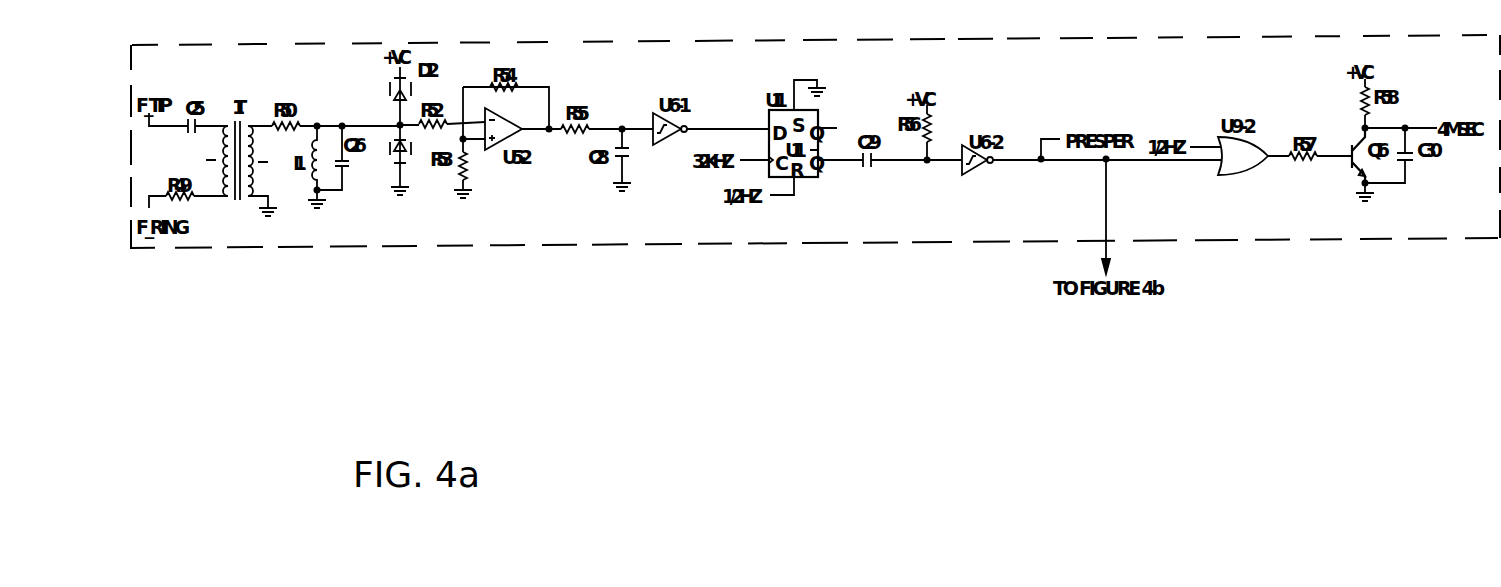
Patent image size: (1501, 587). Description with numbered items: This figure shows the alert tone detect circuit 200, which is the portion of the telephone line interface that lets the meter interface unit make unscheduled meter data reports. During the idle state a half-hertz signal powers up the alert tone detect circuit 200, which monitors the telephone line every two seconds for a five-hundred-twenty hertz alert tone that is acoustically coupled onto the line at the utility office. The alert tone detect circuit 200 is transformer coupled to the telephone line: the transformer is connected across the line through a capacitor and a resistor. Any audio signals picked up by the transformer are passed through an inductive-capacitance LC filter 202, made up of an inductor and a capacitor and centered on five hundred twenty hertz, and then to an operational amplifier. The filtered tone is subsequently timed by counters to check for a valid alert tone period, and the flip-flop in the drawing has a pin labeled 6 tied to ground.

The alert tone detect circuit 200 is at (242, 46).
The LC filter 202 is at (330, 138).
The set pin of flip-flop U11 6 is at (810, 97).